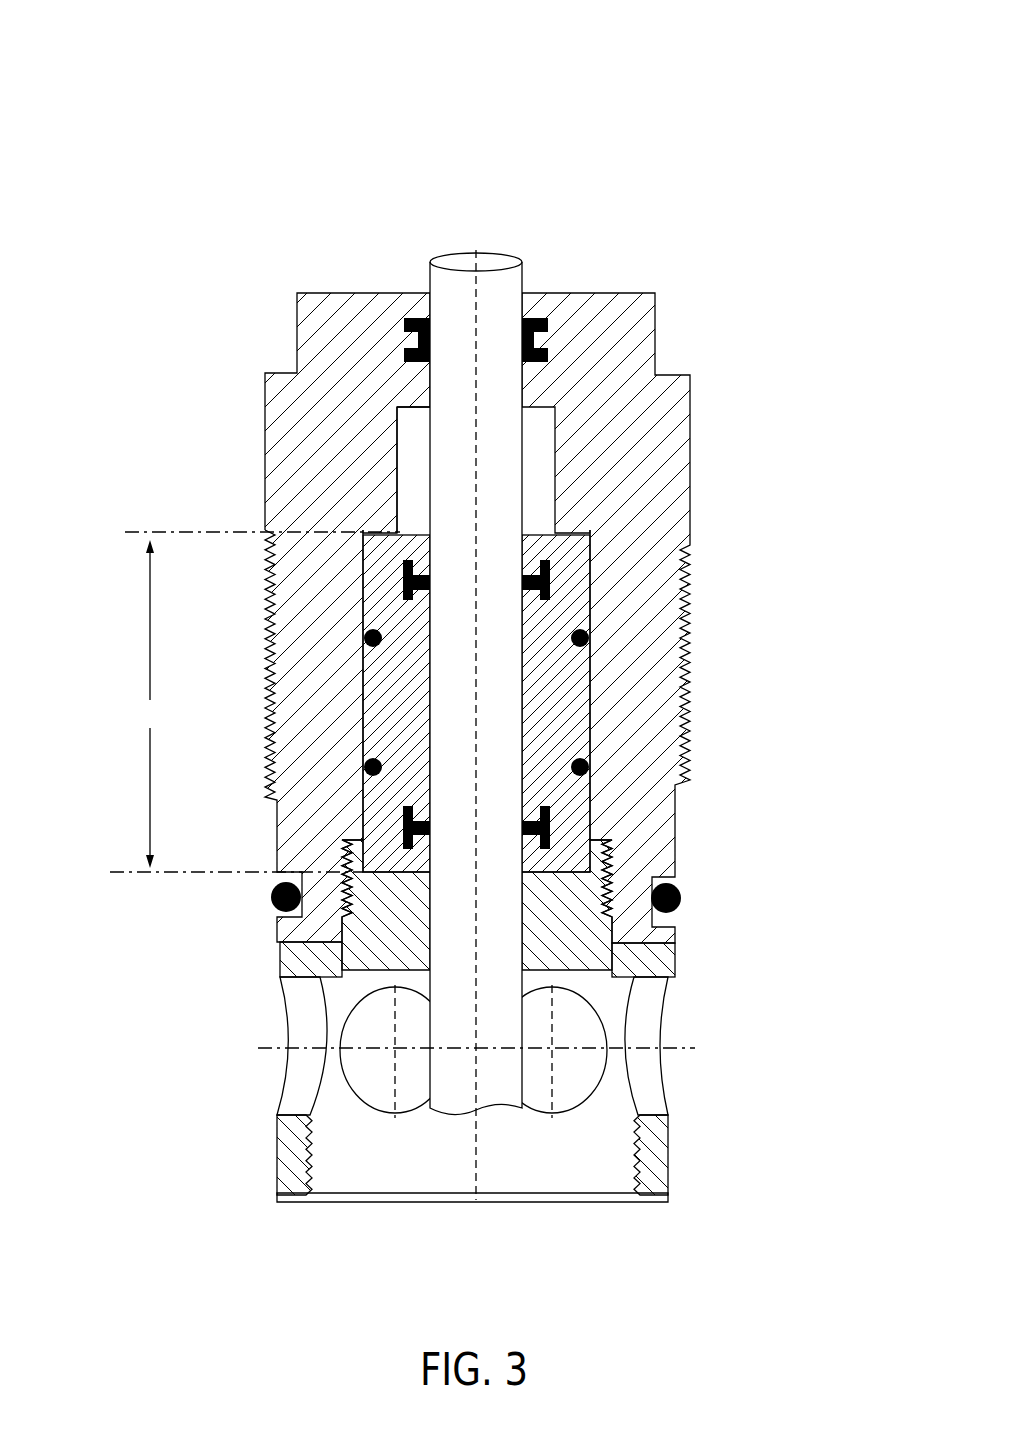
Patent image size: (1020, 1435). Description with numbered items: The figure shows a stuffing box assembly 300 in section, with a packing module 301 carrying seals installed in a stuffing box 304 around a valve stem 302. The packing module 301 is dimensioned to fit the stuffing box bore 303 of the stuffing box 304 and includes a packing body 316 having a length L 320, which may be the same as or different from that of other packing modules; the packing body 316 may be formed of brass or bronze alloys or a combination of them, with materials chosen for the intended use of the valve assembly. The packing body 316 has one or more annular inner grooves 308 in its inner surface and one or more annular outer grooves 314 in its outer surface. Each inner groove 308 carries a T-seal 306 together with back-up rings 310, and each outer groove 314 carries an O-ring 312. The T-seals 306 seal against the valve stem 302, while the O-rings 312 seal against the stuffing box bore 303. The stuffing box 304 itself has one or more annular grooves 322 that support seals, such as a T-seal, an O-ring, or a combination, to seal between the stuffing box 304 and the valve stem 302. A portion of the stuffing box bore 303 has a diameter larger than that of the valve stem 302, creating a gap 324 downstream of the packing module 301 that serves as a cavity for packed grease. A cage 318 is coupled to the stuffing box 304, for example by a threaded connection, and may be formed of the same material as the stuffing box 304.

The stuffing box assembly 300 is at (580, 98).
The packing module 301 is at (373, 553).
The valve stem 302 is at (452, 255).
The stuffing box bore 303 is at (578, 691).
The stuffing box 304 is at (605, 312).
The T-seal 306 is at (557, 823).
The annular inner groove 308 is at (537, 554).
The back-up ring 310 is at (530, 302).
The O-ring 312 is at (362, 644).
The annular outer groove 314 is at (553, 826).
The packing body 316 is at (377, 588).
The cage 318 is at (680, 965).
The length L 320 is at (142, 708).
The annular groove 322 is at (406, 305).
The gap 324 is at (411, 438).